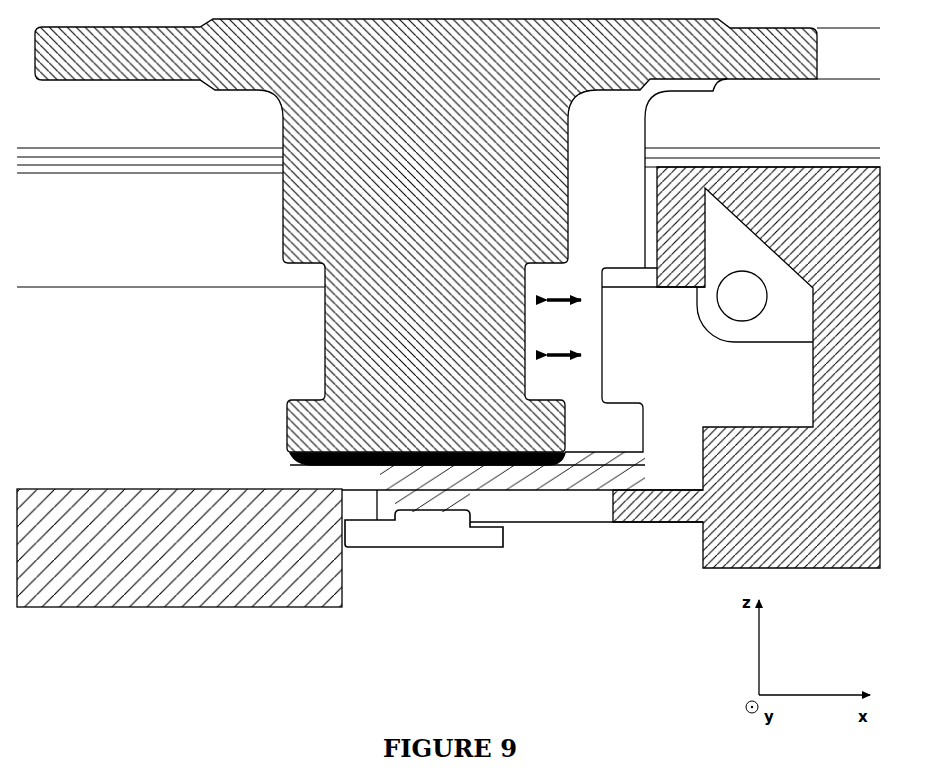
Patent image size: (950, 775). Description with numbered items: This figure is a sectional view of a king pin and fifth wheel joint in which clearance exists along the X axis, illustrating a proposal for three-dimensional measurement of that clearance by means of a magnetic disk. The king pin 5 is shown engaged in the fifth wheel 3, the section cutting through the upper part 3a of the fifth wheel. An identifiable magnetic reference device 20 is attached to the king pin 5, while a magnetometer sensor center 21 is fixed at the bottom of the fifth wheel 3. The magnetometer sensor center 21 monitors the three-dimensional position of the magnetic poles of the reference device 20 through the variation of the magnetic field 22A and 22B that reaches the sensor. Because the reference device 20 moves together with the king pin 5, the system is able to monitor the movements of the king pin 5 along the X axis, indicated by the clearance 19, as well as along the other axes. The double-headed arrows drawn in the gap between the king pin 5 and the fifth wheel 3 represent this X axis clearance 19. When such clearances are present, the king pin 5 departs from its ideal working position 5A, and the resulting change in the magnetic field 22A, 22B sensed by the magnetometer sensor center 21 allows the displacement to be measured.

The fifth wheel 3 is at (448, 387).
The upper part of the fifth wheel 3a is at (448, 157).
The king pin 5 is at (426, 235).
The ideal working position of the king pin 5A is at (643, 452).
The X axis clearance 19 is at (587, 310).
The identifiable magnetic reference device 20 is at (305, 455).
The magnetometer sensor center 21 is at (430, 547).
The magnetic field variation 22A is at (428, 485).
The magnetic field variation 22B is at (535, 492).